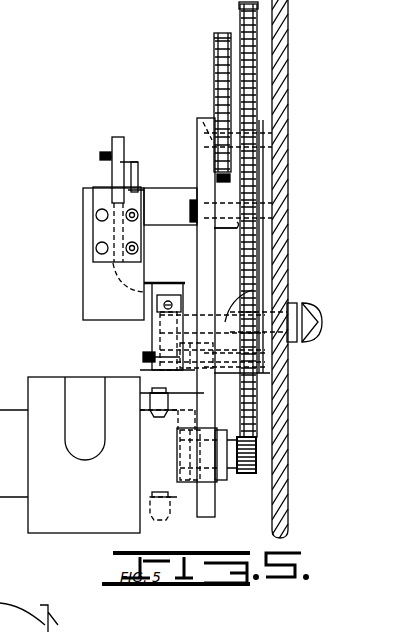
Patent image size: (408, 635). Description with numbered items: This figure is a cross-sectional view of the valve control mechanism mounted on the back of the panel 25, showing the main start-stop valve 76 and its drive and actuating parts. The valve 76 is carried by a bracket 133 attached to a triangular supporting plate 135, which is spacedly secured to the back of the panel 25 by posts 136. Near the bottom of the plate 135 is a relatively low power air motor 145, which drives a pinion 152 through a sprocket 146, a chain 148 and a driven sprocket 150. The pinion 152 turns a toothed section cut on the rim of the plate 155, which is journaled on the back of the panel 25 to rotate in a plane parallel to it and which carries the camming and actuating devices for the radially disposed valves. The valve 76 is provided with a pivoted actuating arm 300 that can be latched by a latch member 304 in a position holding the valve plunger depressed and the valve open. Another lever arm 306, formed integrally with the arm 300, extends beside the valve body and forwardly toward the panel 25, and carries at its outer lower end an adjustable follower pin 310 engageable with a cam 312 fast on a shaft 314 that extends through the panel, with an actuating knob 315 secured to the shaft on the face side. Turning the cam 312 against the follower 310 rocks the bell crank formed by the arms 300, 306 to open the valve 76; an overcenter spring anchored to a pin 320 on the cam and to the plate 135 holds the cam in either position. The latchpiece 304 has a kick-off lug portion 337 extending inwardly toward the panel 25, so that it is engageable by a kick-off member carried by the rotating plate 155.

The panel 25 is at (285, 33).
The start-stop valve 76 is at (90, 296).
The bracket 133 is at (165, 190).
The triangular supporting plate 135 is at (211, 248).
The posts 136 is at (216, 229).
The air motor 145 is at (102, 502).
The sprocket 146 is at (258, 441).
The chain 148 is at (257, 73).
The driven sprocket 150 is at (240, 12).
The pinion 152 is at (213, 117).
The plate 155 is at (214, 53).
The actuating arm 300 is at (111, 146).
The latch member 304 is at (106, 185).
The lever arm 306 is at (158, 292).
The follower pin 310 is at (157, 301).
The cam 312 is at (165, 342).
The shaft 314 is at (226, 318).
The actuating knob 315 is at (304, 307).
The pin 320 is at (143, 358).
The kick-off lug portion 337 is at (133, 158).